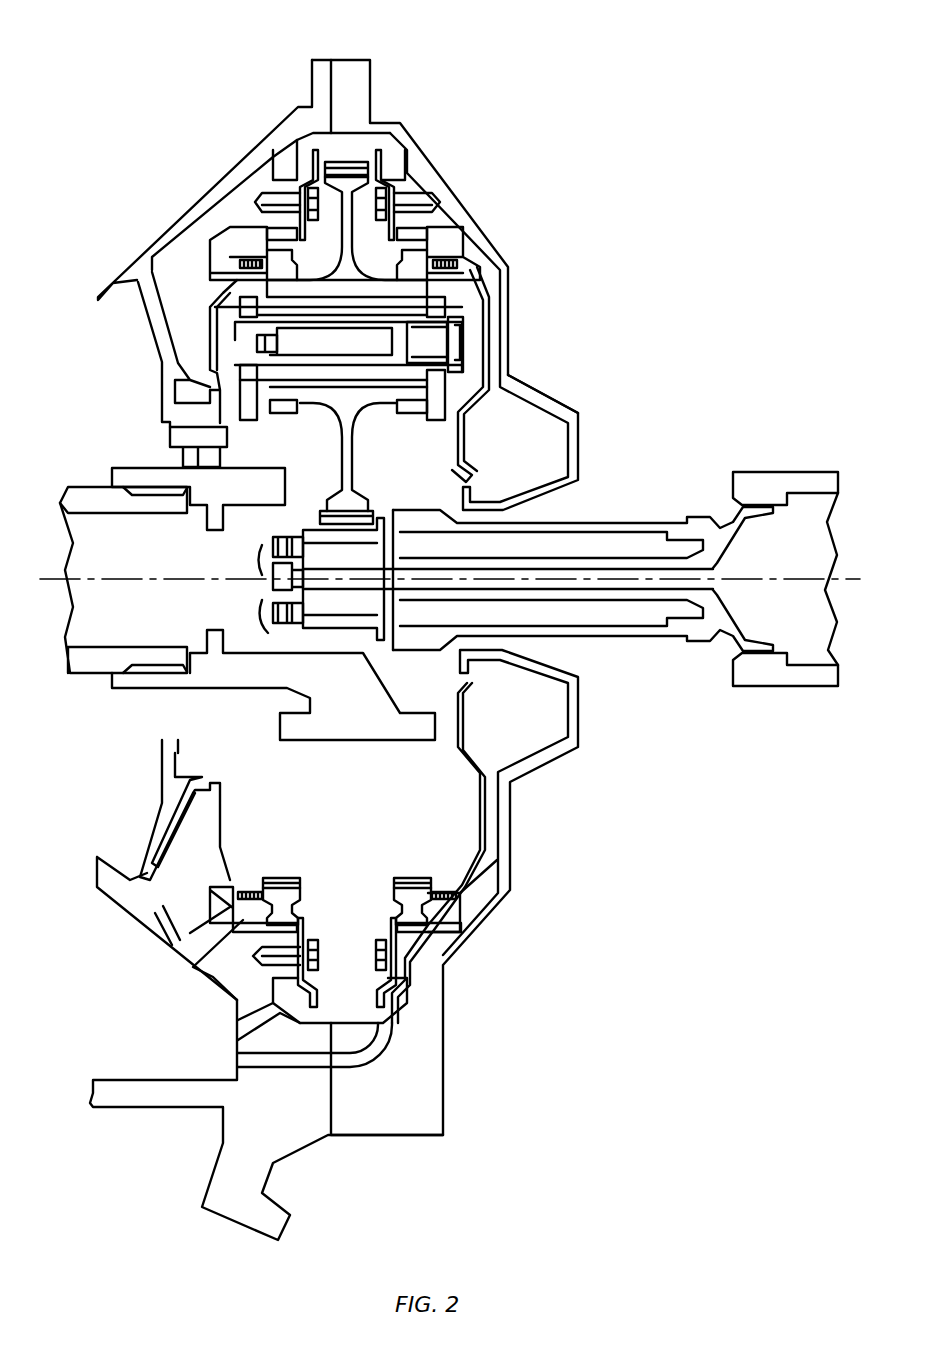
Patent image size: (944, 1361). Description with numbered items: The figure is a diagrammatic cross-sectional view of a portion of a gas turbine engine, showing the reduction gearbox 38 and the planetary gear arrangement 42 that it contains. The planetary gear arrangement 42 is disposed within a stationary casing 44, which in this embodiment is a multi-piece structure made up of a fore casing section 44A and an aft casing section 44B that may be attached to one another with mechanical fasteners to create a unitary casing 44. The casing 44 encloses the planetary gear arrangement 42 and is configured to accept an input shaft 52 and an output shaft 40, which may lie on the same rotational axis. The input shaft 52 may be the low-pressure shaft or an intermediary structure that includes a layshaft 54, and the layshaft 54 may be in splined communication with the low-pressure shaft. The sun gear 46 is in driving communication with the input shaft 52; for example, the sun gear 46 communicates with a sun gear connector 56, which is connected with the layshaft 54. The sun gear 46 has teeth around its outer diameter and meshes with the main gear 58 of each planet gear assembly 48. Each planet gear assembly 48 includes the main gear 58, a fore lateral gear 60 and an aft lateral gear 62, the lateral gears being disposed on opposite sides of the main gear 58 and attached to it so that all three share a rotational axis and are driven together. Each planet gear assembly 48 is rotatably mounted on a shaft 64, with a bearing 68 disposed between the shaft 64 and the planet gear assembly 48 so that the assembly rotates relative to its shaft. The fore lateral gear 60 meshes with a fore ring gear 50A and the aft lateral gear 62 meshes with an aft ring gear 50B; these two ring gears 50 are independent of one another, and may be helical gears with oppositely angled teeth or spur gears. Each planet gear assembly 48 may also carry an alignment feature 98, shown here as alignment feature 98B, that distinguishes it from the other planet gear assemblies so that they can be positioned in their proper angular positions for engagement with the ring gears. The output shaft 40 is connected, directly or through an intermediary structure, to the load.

The reduction gearbox 38 is at (635, 82).
The planetary gear arrangement 42 is at (642, 145).
The casing 44 is at (338, 285).
The fore casing section 44A is at (255, 165).
The aft casing section 44B is at (413, 143).
The main gear 58 is at (348, 162).
The fore lateral gear 60 is at (215, 262).
The aft lateral gear 62 is at (473, 270).
The bearing 68 is at (293, 377).
The planet gear assembly 48 is at (494, 324).
The shaft 64 is at (467, 342).
The alignment feature 98 is at (564, 374).
The bracket portion 98B is at (478, 434).
The output shaft 40 is at (83, 487).
The sun gear 46 is at (277, 517).
The sun gear connector 56 is at (280, 633).
The layshaft 54 is at (615, 522).
The input shaft 52 is at (790, 472).
The ring gears 50 is at (353, 901).
The fore ring gear 50A is at (277, 878).
The aft ring gear 50B is at (418, 880).